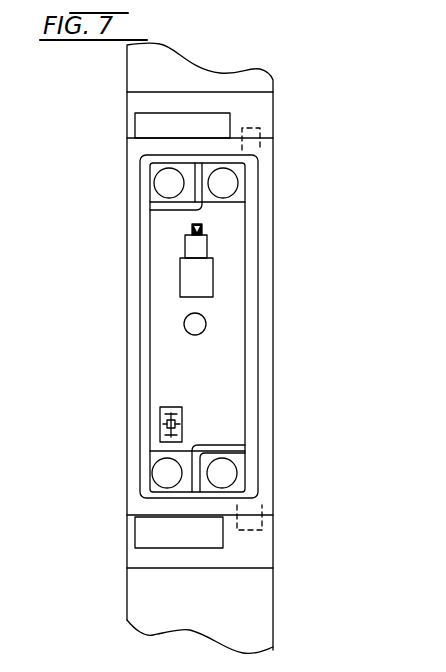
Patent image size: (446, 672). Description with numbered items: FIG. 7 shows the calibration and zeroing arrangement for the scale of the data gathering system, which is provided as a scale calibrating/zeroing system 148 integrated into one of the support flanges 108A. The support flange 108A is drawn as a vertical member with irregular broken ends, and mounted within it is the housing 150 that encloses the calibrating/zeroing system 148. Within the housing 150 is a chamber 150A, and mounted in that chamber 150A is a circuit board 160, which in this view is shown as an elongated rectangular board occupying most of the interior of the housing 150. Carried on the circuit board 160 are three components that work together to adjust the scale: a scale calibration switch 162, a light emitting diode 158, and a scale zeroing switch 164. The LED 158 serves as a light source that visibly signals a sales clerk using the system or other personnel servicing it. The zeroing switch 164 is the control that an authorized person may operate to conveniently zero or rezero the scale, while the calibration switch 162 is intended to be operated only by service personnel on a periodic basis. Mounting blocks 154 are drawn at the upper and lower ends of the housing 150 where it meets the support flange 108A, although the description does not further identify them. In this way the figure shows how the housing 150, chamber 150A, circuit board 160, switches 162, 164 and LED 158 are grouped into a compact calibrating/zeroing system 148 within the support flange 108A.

The support flange 108A is at (128, 76).
The mounting block 154 is at (140, 116).
The housing 150 is at (127, 358).
The circuit board 160 is at (237, 388).
The scale calibrating/zeroing system 148 is at (100, 257).
The chamber 150A is at (12, 165).
The scale calibration switch 162 is at (213, 282).
The light emitting diode (LED) 158 is at (206, 323).
The scale zeroing switch 164 is at (160, 413).